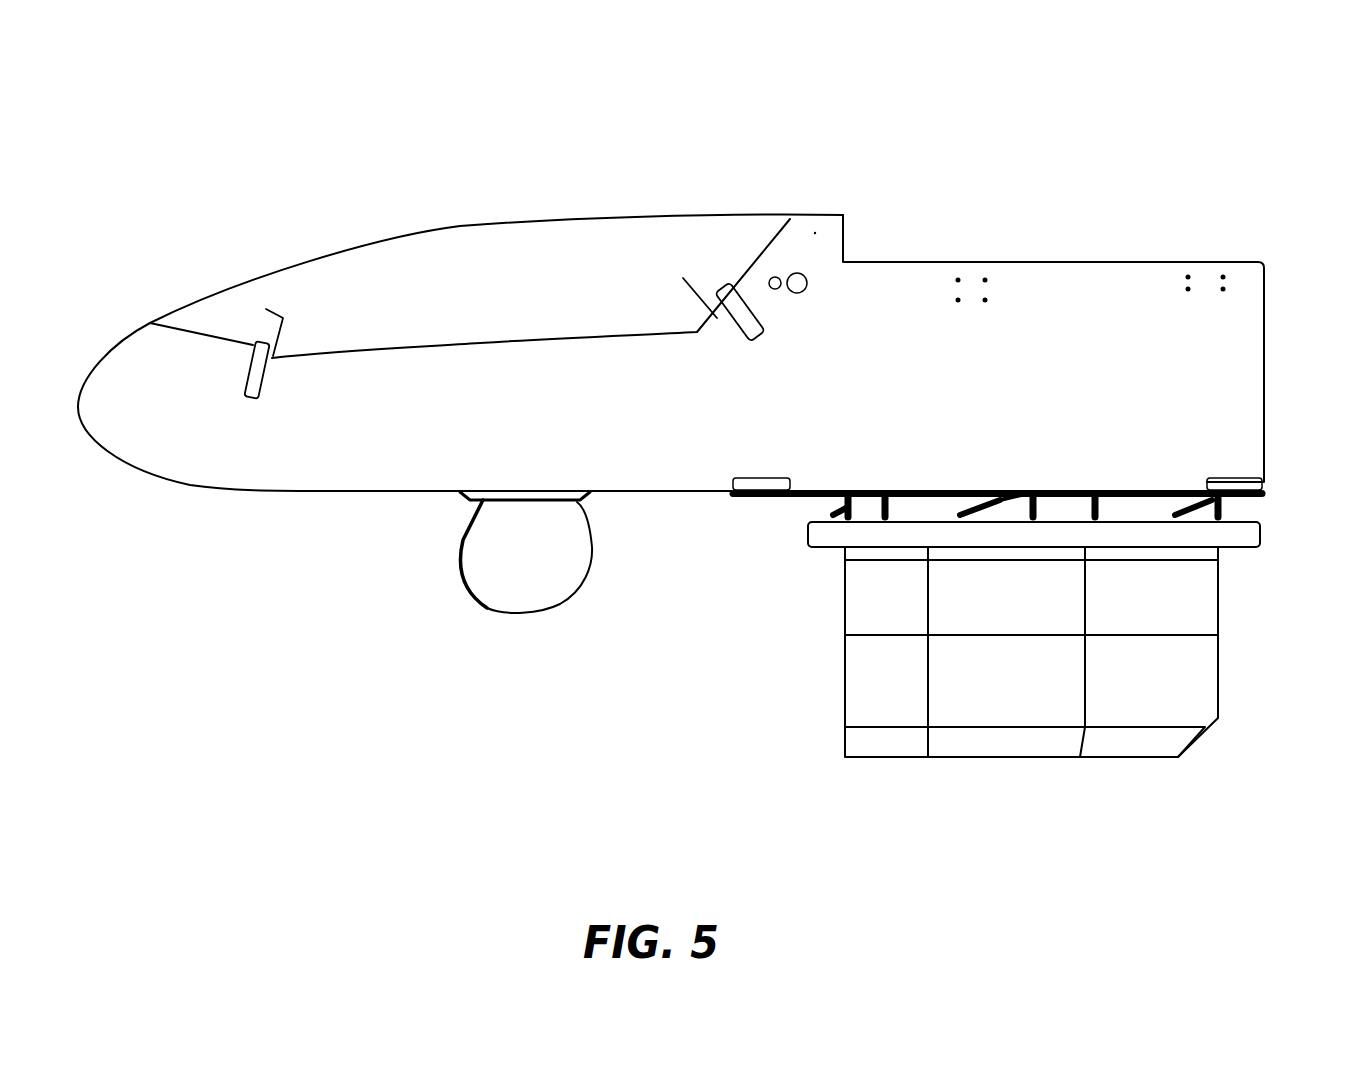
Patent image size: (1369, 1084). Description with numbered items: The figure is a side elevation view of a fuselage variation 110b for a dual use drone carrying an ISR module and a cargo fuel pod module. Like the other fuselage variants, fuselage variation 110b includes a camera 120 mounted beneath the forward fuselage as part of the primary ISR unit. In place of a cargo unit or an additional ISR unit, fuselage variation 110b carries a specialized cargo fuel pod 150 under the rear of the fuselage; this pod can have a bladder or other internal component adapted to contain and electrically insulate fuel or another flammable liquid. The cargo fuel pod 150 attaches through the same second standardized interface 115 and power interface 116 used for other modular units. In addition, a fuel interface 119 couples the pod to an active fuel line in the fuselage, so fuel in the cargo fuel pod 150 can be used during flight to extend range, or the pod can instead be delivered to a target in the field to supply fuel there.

The fuselage variation 110b is at (154, 104).
The second standardized interface 115 is at (1260, 498).
The power interface 116 is at (1217, 488).
The fuel interface 119 is at (953, 513).
The cargo fuel pod 150 is at (1180, 615).
The camera 120 is at (522, 549).